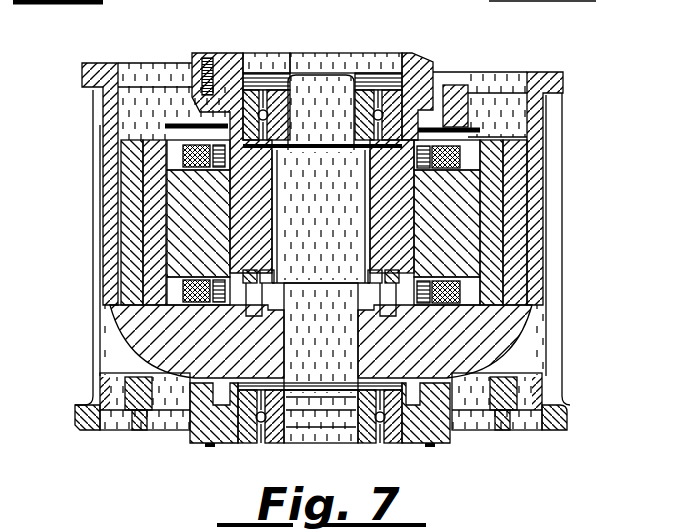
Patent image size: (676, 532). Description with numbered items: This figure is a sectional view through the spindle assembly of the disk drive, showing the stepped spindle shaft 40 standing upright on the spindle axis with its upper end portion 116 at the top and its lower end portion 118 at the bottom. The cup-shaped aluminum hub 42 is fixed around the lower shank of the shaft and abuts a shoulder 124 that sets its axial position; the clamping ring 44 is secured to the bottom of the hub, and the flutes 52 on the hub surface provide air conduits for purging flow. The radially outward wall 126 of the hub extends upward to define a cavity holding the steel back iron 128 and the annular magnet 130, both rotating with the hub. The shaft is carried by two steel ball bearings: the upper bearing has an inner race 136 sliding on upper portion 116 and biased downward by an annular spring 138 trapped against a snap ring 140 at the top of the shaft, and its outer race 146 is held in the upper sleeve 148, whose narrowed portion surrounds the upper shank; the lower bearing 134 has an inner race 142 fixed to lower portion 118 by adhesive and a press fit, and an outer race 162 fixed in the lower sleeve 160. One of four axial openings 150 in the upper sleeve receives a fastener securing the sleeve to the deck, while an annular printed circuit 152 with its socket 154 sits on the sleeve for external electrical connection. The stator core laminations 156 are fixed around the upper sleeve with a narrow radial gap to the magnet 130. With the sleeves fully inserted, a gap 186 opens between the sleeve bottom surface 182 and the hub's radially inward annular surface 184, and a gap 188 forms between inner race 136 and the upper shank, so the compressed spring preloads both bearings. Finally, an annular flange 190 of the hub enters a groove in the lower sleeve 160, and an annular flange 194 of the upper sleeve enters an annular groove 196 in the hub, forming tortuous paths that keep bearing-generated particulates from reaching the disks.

The spindle shaft 40 is at (333, 78).
The hub 42 is at (512, 335).
The clamping ring 44 is at (80, 423).
The flutes 52 is at (532, 273).
The upper end portion 116 is at (321, 112).
The lower end portion 118 is at (320, 432).
The shoulder 124 is at (306, 284).
The radially outward wall 126 is at (540, 176).
The back iron 128 is at (125, 155).
The magnet 130 is at (155, 197).
The lower bearing 134 is at (389, 442).
The inner race 136 is at (376, 60).
The annular spring 138 is at (263, 98).
The snap ring 140 is at (367, 67).
The inner race 142 is at (290, 385).
The outer race 146 is at (245, 50).
The upper sleeve 148 is at (401, 187).
The opening 150 is at (207, 52).
The printed circuit 152 is at (180, 122).
The socket 154 is at (463, 85).
The core laminations 156 is at (468, 230).
The lower sleeve 160 is at (197, 442).
The outer race 162 is at (250, 435).
The bottom surface 182 is at (220, 303).
The radially inward annular surface 184 is at (378, 282).
The gap 186 is at (289, 279).
The gap 188 is at (283, 160).
The annular flange 190 is at (451, 413).
The annular flange 194 is at (262, 268).
The annular groove 196 is at (252, 318).